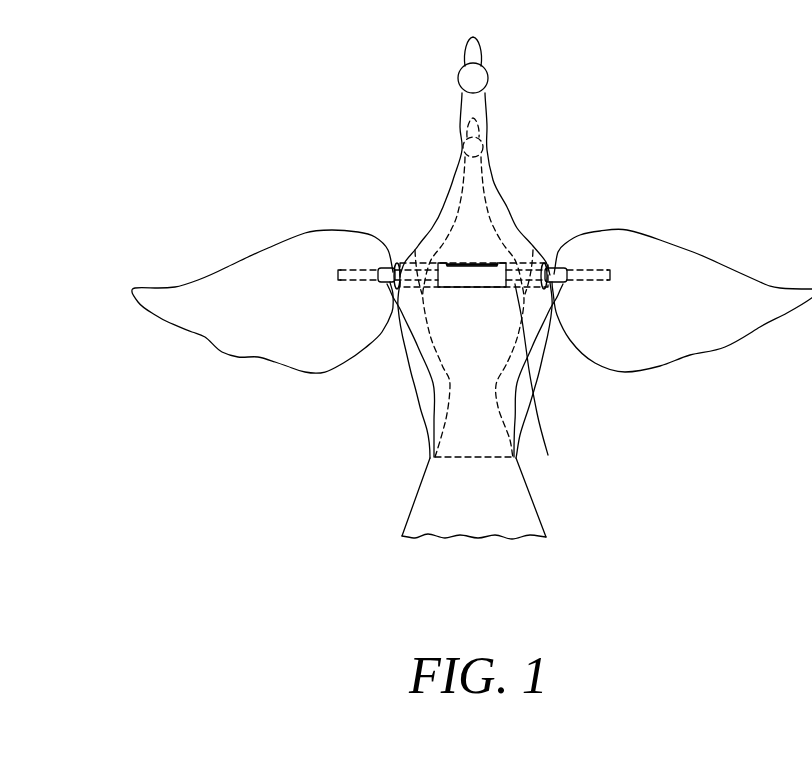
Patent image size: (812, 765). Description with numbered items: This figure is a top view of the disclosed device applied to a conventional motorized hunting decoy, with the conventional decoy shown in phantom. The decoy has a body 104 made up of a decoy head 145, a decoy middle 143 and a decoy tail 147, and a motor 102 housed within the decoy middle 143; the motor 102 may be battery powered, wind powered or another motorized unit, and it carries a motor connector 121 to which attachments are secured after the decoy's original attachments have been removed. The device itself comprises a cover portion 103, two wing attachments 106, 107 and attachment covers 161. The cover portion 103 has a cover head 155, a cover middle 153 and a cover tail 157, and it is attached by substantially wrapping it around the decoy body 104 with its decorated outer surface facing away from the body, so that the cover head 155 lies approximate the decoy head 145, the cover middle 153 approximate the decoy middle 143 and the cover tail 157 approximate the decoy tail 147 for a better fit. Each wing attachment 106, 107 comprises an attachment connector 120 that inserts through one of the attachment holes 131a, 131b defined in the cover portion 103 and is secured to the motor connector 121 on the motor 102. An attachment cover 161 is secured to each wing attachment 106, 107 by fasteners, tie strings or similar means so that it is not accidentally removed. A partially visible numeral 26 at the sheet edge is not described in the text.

The cover head 155 is at (465, 71).
The decoy head 145 is at (477, 150).
The decoy middle 143 is at (477, 220).
The body 104 is at (452, 170).
The cover portion 103 is at (525, 180).
The motor 102 is at (483, 272).
The motor connector 121 is at (416, 272).
The attachment hole 131a is at (400, 300).
The attachment hole 131b is at (547, 290).
The attachment cover 161 is at (280, 265).
The wing attachment 106 is at (262, 338).
The wing attachment 107 is at (688, 334).
The attachment connector 120 is at (433, 381).
The cover middle 153 is at (433, 400).
The cover tail 157 is at (447, 538).
The decoy tail 147 is at (497, 460).
The partial numeral 26 is at (802, 66).